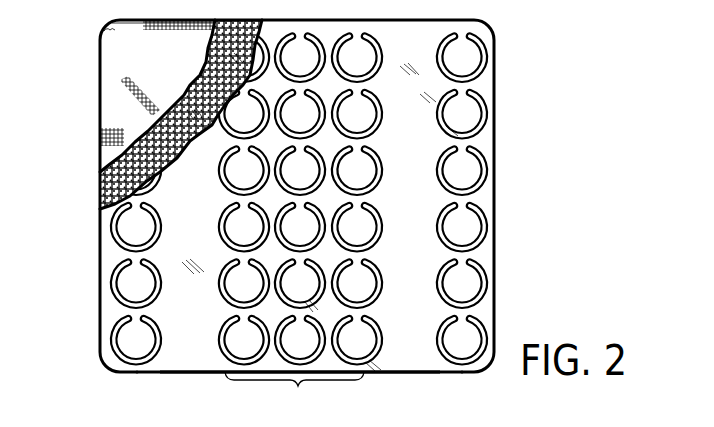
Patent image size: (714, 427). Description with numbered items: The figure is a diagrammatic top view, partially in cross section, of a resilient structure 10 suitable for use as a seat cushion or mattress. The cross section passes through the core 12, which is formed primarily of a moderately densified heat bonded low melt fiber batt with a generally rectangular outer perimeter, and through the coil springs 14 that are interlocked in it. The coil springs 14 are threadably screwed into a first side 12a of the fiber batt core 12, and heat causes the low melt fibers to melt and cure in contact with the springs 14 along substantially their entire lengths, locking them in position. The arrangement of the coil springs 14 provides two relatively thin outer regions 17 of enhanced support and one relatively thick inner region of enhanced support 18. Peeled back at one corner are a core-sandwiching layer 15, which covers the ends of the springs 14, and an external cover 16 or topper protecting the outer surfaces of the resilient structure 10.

The resilient structure 10 is at (307, 210).
The core 12 is at (100, 312).
The first side 12a is at (198, 360).
The coil springs 14 is at (346, 33).
The core-sandwiching layers 15 is at (112, 187).
The external covers 16 is at (123, 62).
The outer regions of enhanced support 17 is at (137, 378).
The inner region of enhanced support 18 is at (294, 391).